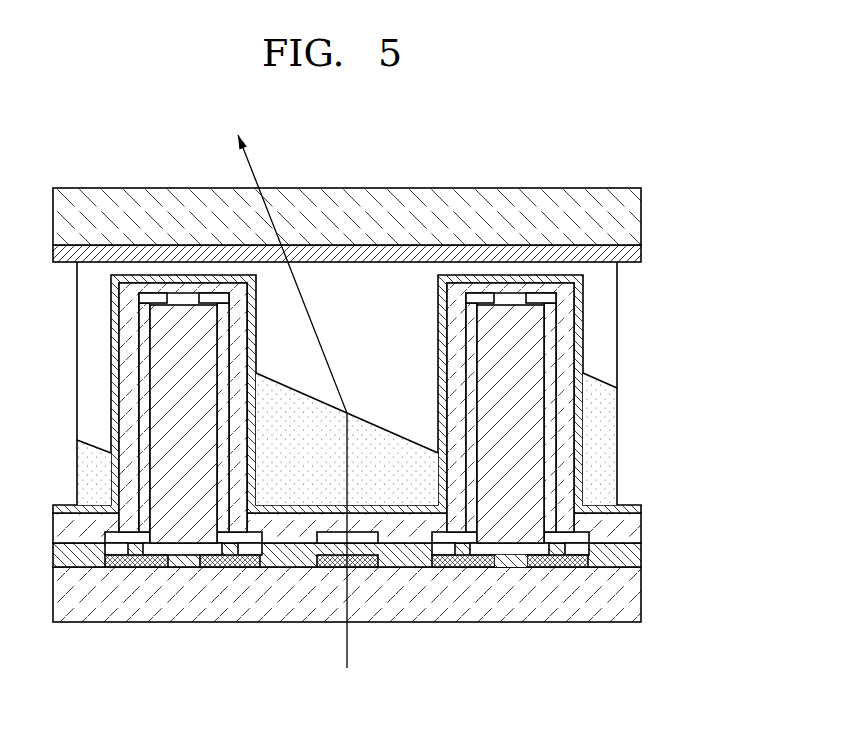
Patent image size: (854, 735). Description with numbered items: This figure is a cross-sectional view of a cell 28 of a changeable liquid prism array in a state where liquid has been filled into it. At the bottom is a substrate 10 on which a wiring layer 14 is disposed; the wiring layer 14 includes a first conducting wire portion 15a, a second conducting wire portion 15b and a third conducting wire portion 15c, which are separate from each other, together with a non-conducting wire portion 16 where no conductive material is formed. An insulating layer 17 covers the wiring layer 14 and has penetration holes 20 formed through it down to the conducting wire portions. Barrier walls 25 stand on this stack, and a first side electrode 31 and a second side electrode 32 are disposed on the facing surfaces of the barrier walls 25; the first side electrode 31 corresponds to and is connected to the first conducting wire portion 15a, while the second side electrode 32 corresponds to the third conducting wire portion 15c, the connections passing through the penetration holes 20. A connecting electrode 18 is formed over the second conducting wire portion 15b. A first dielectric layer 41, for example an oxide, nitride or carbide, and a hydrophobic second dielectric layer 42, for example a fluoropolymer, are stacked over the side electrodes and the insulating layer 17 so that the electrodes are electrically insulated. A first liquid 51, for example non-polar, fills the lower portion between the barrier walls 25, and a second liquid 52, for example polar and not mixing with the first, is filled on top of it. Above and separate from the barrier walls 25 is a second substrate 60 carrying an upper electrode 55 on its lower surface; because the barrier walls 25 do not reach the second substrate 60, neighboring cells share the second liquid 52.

The substrate 10 is at (641, 600).
The wiring layer 14 is at (598, 557).
The first conducting wire portion 15a is at (118, 567).
The second conducting wire portion 15b is at (363, 562).
The third conducting wire portion 15c is at (217, 562).
The non-conducting wire portion 16 is at (512, 565).
The insulating layer 17 is at (641, 557).
The connecting electrode 18 is at (321, 535).
The penetration hole 20 is at (560, 531).
The barrier wall 25 is at (530, 397).
The cell 28 is at (647, 165).
The first side electrode 31 is at (148, 297).
The second side electrode 32 is at (222, 297).
The first dielectric layer 41 is at (569, 353).
The second dielectric layer 42 is at (583, 312).
The first liquid 51 is at (284, 468).
The second liquid 52 is at (388, 349).
The upper electrode 55 is at (641, 252).
The second substrate 60 is at (641, 210).